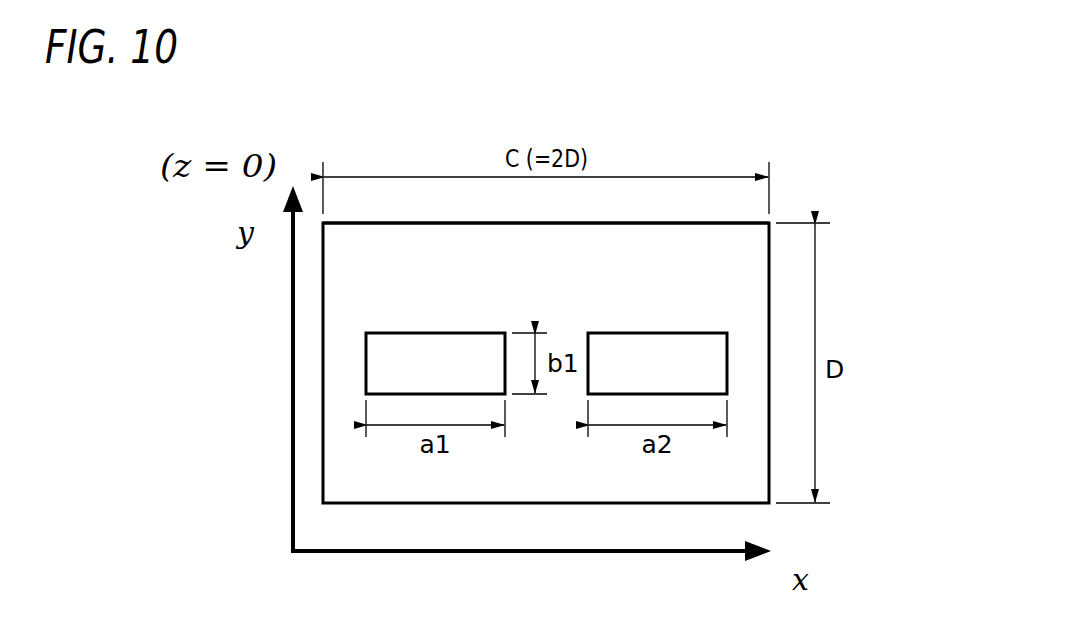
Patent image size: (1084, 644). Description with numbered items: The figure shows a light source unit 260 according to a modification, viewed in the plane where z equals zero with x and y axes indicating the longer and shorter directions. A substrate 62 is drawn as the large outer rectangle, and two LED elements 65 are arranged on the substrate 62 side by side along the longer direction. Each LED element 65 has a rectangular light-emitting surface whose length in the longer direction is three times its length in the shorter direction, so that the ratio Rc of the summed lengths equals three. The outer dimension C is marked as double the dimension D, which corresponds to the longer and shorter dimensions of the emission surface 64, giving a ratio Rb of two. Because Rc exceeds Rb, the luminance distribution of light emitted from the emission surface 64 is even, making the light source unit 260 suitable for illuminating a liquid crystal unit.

The light source unit 260 is at (595, 289).
The substrate 62 is at (745, 467).
The emission surface 64 is at (680, 223).
The LED elements 65 is at (657, 333).